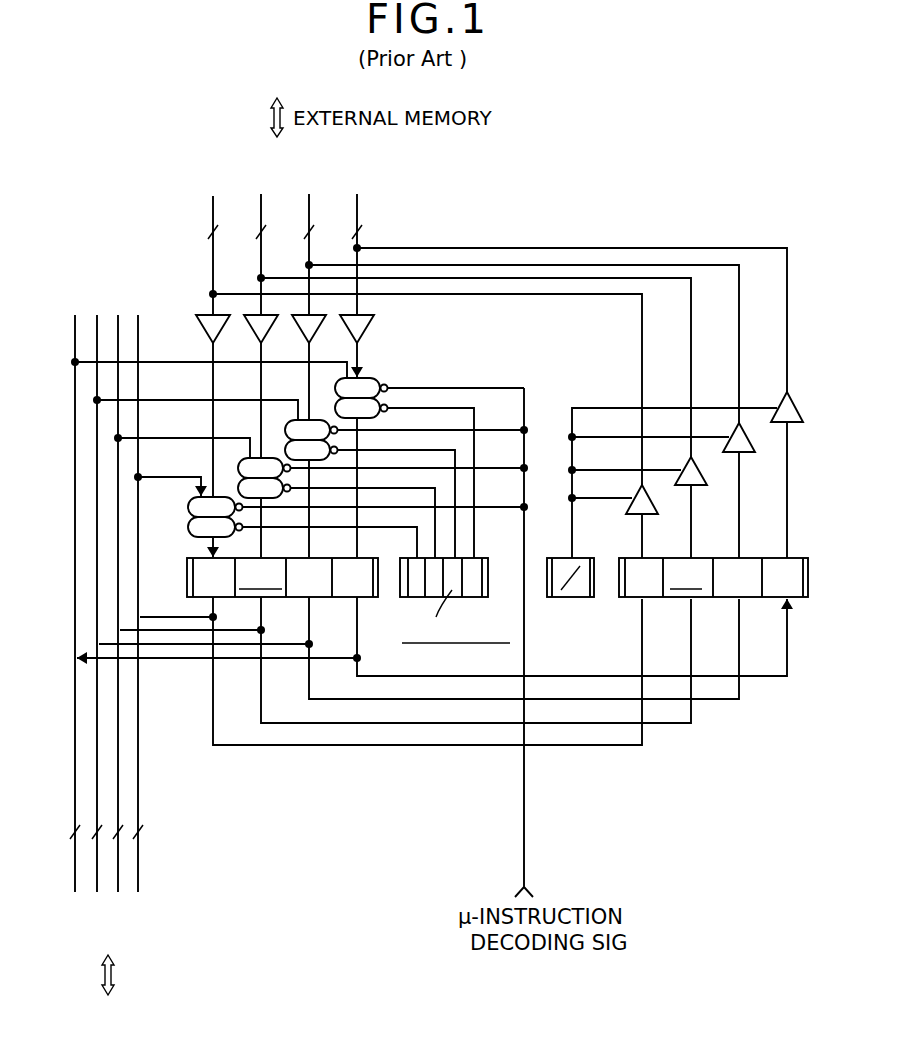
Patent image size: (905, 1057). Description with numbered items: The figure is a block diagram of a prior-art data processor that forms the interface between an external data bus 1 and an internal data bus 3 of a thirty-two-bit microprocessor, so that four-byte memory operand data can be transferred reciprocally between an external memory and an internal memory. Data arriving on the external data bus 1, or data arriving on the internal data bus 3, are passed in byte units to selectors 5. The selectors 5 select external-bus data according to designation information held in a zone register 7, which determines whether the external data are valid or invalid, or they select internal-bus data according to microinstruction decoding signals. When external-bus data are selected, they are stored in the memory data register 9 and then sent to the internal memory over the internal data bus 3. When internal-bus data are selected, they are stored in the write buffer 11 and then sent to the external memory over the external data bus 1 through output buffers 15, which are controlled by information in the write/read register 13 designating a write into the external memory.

The external data bus 1 is at (370, 176).
The internal data bus 3 is at (140, 902).
The selectors 5 is at (368, 380).
The zone register 7 is at (488, 575).
The memory data register (MDR) 9 is at (378, 592).
The write buffer 11 is at (808, 578).
The write/read register 13 is at (584, 558).
The output buffers 15 is at (790, 402).